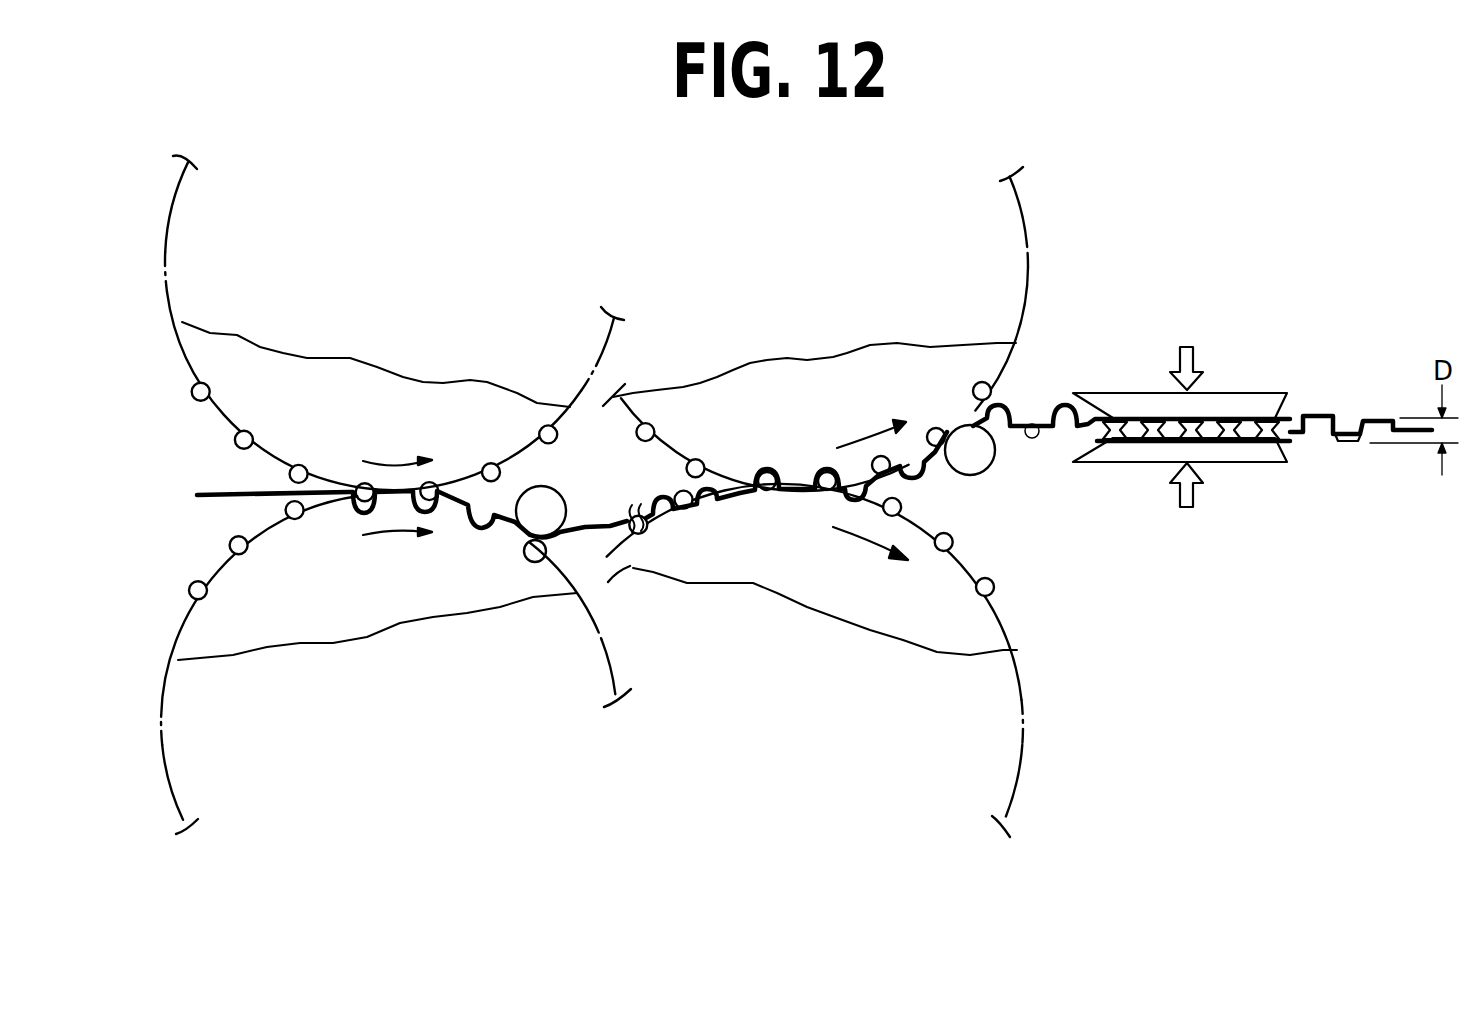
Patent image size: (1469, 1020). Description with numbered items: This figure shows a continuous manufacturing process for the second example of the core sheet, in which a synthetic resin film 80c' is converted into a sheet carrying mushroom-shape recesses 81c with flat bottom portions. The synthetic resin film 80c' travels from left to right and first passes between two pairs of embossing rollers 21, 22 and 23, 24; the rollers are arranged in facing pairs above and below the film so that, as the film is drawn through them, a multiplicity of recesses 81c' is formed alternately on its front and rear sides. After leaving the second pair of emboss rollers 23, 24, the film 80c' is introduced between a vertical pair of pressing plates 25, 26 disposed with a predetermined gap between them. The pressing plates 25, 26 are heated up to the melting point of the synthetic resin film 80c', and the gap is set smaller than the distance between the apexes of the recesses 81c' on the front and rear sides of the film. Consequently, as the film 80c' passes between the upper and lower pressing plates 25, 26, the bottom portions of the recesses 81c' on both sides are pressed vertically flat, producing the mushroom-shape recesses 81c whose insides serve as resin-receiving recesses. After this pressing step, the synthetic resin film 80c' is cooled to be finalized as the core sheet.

The embossing roller 21 is at (368, 425).
The embossing roller 22 is at (370, 607).
The embossing roller 23 is at (827, 420).
The embossing roller 24 is at (818, 573).
The pressing plate 25 is at (1230, 407).
The pressing plate 26 is at (1237, 450).
The synthetic resin film 80c' is at (791, 486).
The recesses 81c' is at (798, 490).
The mushroom-shape recesses 81c is at (1238, 424).